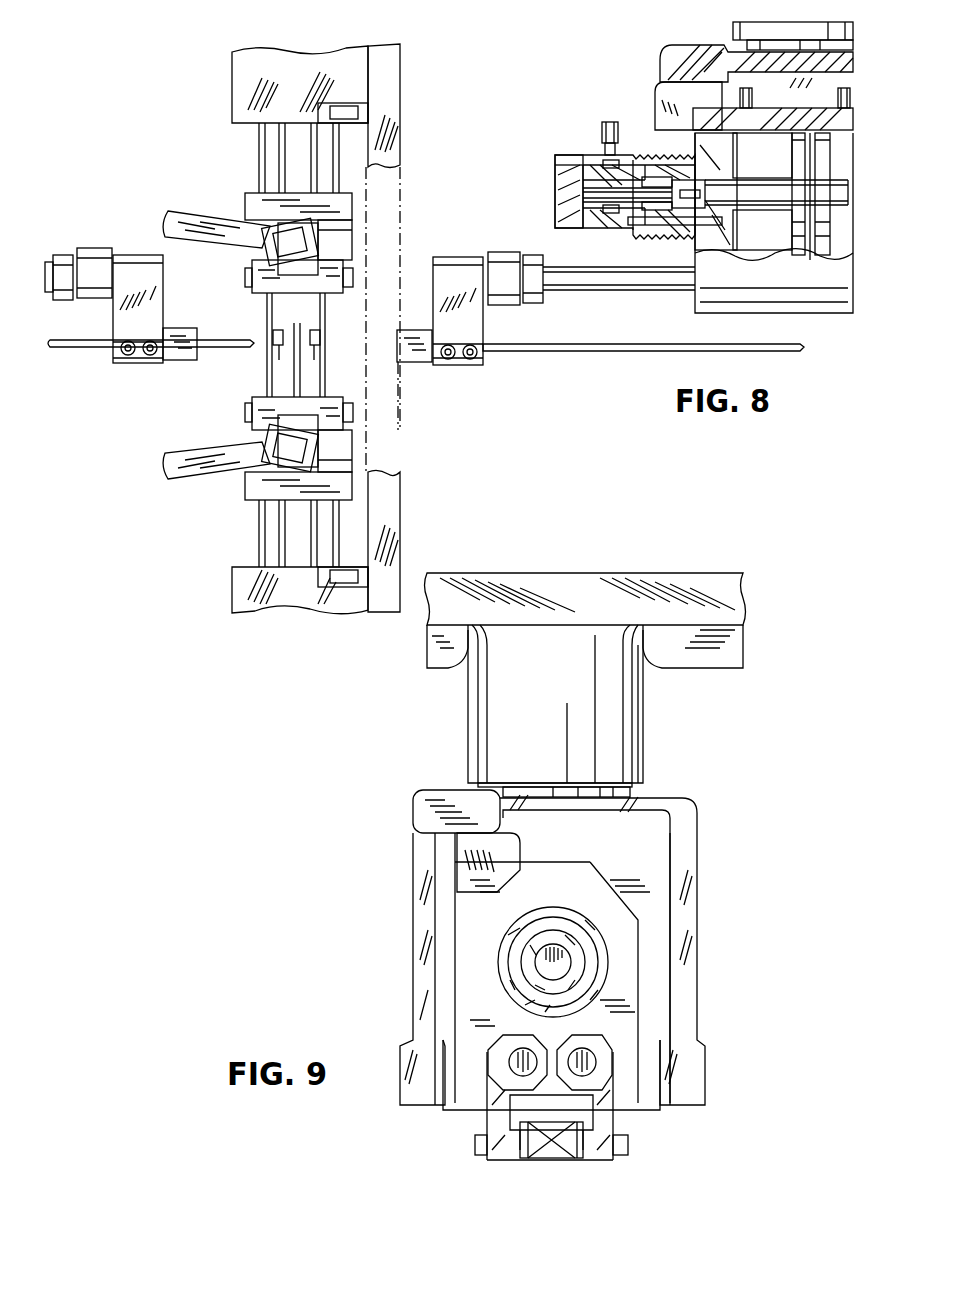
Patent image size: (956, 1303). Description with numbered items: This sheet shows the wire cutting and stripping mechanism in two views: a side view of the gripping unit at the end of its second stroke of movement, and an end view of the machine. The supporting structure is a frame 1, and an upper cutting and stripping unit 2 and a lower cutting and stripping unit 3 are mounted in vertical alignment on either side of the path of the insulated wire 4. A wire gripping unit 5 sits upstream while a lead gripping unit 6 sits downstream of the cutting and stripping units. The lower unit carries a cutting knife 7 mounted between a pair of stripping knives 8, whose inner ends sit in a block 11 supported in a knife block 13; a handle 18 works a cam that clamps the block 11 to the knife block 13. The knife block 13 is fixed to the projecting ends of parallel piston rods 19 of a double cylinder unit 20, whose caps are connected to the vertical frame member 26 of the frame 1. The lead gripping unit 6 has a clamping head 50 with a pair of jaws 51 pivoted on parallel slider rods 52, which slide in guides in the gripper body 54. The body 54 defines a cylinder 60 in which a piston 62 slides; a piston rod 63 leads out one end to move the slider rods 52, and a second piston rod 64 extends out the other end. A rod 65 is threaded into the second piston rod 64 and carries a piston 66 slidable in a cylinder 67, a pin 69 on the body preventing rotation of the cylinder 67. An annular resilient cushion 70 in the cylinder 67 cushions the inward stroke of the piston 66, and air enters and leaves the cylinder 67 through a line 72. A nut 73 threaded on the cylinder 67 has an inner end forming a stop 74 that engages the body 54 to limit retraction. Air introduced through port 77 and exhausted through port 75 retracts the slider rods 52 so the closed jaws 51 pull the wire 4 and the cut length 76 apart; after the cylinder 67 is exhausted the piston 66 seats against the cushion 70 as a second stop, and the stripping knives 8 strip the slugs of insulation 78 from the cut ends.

In FIG. 9, the frame 1 is at (660, 578).
In FIG. 8, the upper cutting and stripping unit 2 is at (232, 54).
In FIG. 8, the lower cutting and stripping unit 3 is at (232, 597).
In FIG. 8, the insulated wire 4 is at (94, 348).
In FIG. 8, the wire gripping unit 5 is at (173, 361).
In FIG. 8, the lead gripping unit 6 is at (490, 366).
In FIG. 9, the lead gripping unit 6 is at (686, 808).
In FIG. 8, the cutting knife 7 is at (298, 370).
In FIG. 8, the stripping knives 8 is at (267, 368).
In FIG. 8, the block 11 is at (252, 288).
In FIG. 8, the knife block 13 is at (245, 196).
In FIG. 8, the handle 18 is at (178, 214).
In FIG. 8, the piston rods 19 is at (315, 158).
In FIG. 8, the double cylinder unit 20 is at (232, 92).
In FIG. 8, the vertical frame member 26 is at (401, 56).
In FIG. 8, the clamping head 50 is at (126, 255).
In FIG. 9, the clamping head 50 is at (600, 1163).
In FIG. 8, the jaws 51 is at (180, 330).
In FIG. 9, the jaws 51 is at (628, 1140).
In FIG. 8, the slider rods 52 is at (574, 291).
In FIG. 9, the slider rods 52 is at (582, 1052).
In FIG. 8, the gripper body 54 is at (810, 313).
In FIG. 9, the gripper body 54 is at (632, 965).
In FIG. 8, the cylinder 60 is at (706, 118).
In FIG. 8, the piston 62 is at (792, 165).
In FIG. 8, the piston rod 63 is at (850, 190).
In FIG. 8, the second piston rod 64 is at (763, 206).
In FIG. 8, the rod 65 is at (585, 190).
In FIG. 9, the rod 65 is at (565, 945).
In FIG. 8, the piston 66 is at (583, 210).
In FIG. 8, the cylinder 67 is at (565, 228).
In FIG. 9, the cylinder 67 is at (522, 992).
In FIG. 8, the pin 69 is at (704, 225).
In FIG. 8, the annular resilient cushion 70 is at (612, 213).
In FIG. 8, the line 72 is at (608, 122).
In FIG. 8, the nut 73 is at (650, 235).
In FIG. 9, the nut 73 is at (500, 962).
In FIG. 8, the stop 74 is at (696, 136).
In FIG. 8, the port 75 is at (850, 108).
In FIG. 8, the cut length 76 is at (616, 353).
In FIG. 8, the port 77 is at (752, 108).
In FIG. 8, the slugs of insulation 78 is at (278, 332).